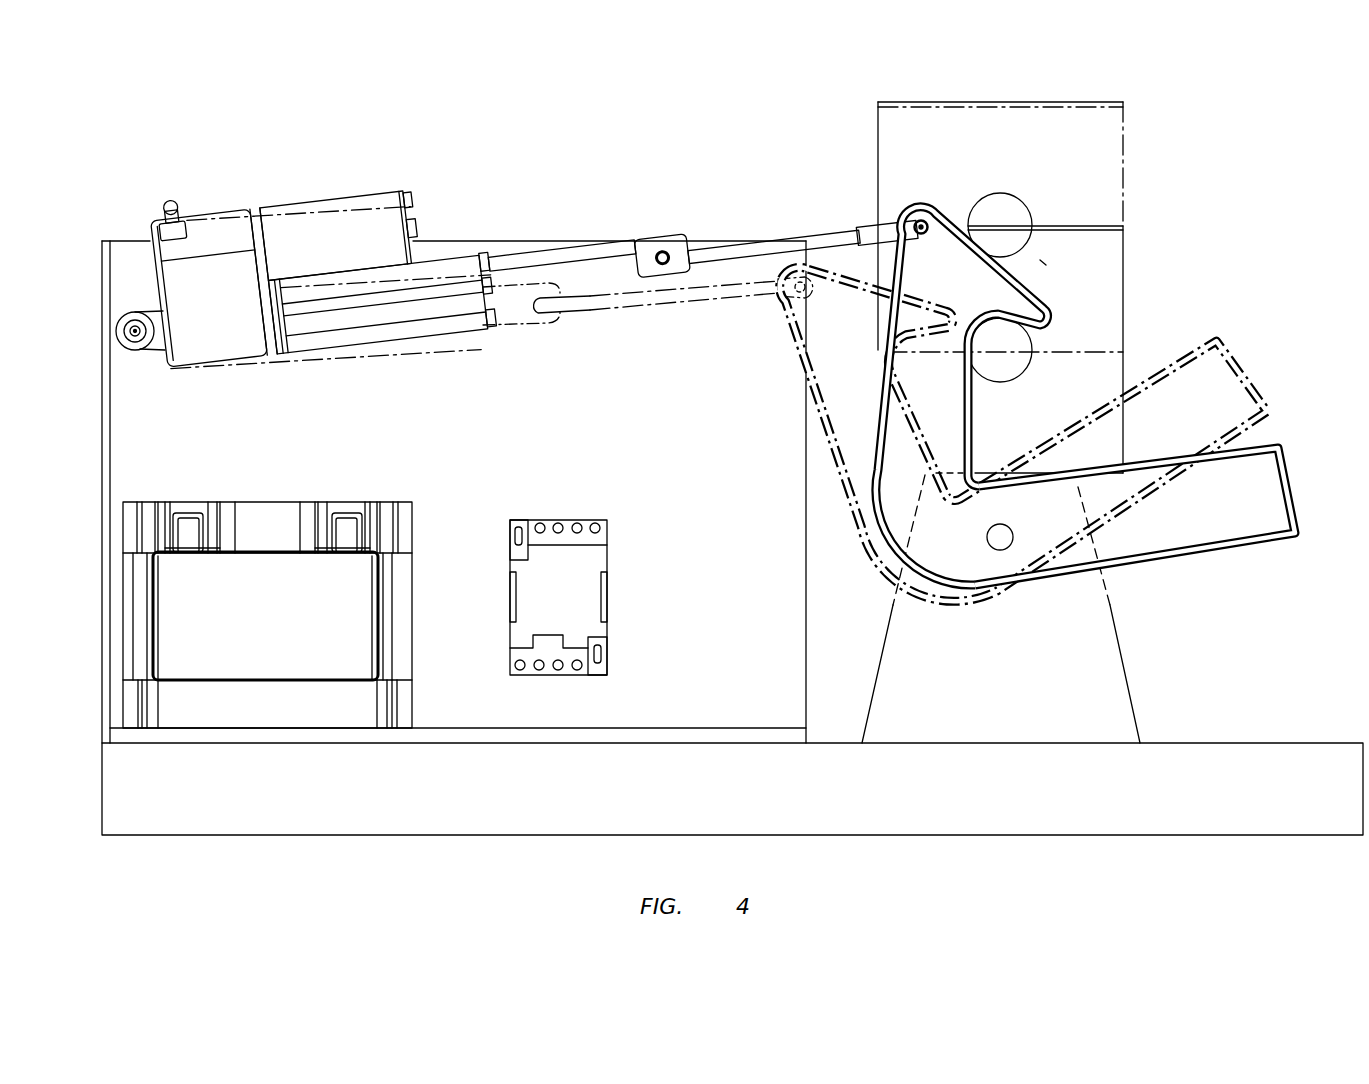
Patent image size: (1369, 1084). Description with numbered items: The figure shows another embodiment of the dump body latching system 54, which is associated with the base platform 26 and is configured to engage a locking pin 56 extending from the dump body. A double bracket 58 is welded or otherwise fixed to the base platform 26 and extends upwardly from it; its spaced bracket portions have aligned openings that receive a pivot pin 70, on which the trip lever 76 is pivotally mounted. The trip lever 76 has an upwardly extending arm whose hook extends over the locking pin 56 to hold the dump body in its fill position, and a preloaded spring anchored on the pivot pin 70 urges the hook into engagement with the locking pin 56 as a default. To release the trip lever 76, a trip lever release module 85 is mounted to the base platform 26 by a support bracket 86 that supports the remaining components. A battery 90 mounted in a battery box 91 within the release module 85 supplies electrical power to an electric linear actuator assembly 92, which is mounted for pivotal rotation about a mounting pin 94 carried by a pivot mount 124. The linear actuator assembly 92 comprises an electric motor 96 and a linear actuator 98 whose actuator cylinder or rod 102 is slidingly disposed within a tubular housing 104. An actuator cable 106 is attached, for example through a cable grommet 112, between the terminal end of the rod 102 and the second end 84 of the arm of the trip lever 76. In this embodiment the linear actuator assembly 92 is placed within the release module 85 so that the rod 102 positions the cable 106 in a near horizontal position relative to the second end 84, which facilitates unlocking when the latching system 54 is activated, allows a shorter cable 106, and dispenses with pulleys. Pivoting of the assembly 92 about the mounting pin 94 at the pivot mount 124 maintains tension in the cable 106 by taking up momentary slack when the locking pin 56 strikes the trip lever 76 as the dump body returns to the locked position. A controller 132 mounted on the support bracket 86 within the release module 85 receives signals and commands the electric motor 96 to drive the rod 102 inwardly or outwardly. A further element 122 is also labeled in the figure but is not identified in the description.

The base platform 26 is at (1312, 805).
The dump body latching system 54 is at (369, 275).
The locking pin 56 is at (1015, 215).
The double bracket 58 is at (1124, 655).
The pivot pin 70 is at (1000, 540).
The trip lever 76 is at (1064, 299).
The second end 84 is at (918, 208).
The trip lever release module 85 is at (178, 433).
The support bracket 86 is at (757, 712).
The battery 90 is at (168, 596).
The battery box 91 is at (168, 707).
The electric linear actuator assembly 92 is at (207, 279).
The mounting pin 94 is at (118, 337).
The electric motor 96 is at (340, 235).
The linear actuator 98 is at (382, 303).
The actuator cylinder or rod 102 is at (589, 264).
The tubular housing 104 is at (383, 308).
The actuator cable 106 is at (726, 238).
The cable grommet 112 is at (826, 238).
The slot 122 is at (1040, 260).
The pivot mount 124 is at (140, 350).
The controller 132 is at (585, 595).